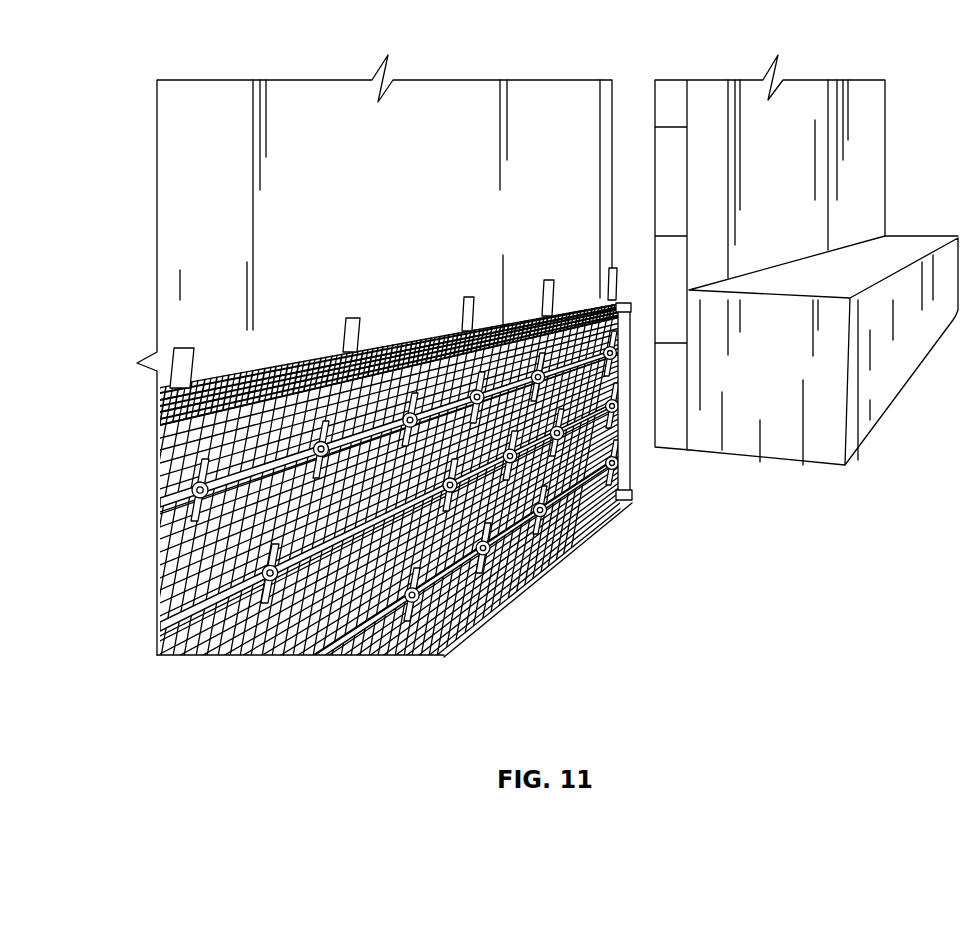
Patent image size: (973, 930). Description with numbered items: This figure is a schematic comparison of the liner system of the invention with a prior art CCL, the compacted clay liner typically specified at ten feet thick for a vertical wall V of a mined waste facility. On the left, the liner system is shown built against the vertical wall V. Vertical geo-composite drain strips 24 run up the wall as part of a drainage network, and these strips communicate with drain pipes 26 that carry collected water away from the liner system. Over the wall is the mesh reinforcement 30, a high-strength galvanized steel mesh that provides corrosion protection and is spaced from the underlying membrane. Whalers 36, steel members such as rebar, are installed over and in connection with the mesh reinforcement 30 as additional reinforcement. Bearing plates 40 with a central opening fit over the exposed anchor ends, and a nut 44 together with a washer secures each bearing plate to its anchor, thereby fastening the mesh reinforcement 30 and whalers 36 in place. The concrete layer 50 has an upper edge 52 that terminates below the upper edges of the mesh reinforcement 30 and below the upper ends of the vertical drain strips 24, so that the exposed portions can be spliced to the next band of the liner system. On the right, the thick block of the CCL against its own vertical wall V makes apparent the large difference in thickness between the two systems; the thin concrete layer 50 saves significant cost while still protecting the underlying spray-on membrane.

The vertical geo-composite strips 24 is at (186, 348).
The drain pipes 26 is at (621, 302).
The mesh reinforcement 30 is at (315, 365).
The whalers 36 is at (172, 525).
The bearing plates 40 is at (192, 494).
The nut 44 is at (200, 487).
The concrete layer 50 is at (626, 450).
The upper edge of the concrete layer 52 is at (240, 402).
The vertical wall V is at (231, 92).
The compacted clay liner CCL is at (915, 245).